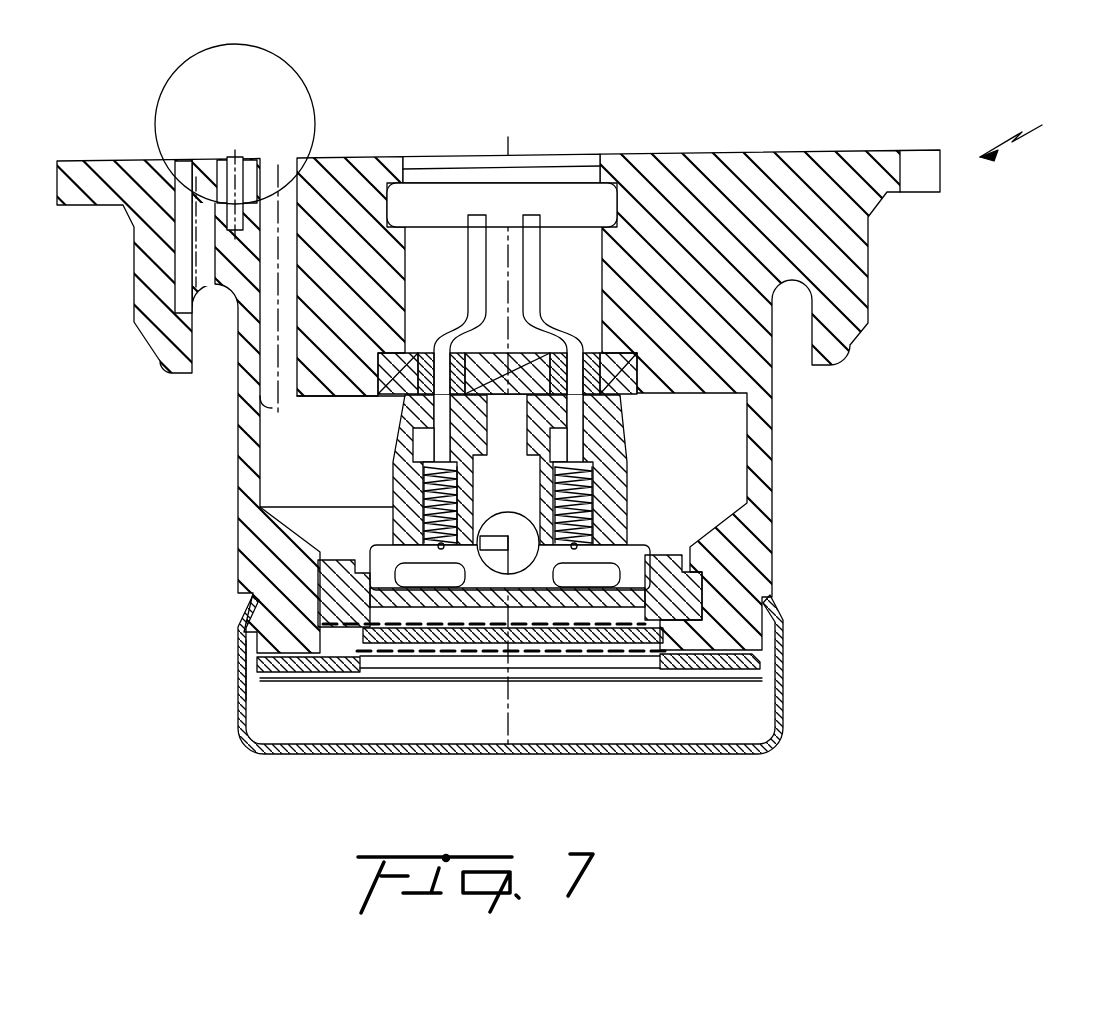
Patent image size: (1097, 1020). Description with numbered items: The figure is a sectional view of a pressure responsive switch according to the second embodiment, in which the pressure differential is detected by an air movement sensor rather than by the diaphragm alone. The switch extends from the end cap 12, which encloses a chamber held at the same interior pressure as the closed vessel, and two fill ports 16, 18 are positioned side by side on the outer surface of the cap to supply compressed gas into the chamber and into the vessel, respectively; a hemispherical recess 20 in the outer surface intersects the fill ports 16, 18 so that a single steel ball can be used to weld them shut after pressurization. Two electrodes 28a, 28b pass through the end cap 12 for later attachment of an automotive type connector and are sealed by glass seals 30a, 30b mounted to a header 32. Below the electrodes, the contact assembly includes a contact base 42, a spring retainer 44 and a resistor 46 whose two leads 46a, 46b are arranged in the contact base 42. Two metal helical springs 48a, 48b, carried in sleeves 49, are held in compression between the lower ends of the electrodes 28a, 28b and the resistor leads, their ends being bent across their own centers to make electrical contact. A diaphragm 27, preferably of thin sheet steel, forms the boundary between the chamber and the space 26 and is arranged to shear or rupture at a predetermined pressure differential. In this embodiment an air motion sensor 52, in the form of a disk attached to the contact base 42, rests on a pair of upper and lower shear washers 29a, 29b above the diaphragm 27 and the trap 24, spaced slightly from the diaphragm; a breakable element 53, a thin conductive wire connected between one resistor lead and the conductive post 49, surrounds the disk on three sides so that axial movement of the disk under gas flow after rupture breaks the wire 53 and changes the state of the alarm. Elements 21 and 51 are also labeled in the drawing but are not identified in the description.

The end cap 12 is at (1029, 136).
The fill port 16 is at (260, 393).
The fill port 18 is at (192, 255).
The hemispherical recess 20 is at (176, 172).
The pin 21 is at (243, 162).
The trap 24 is at (703, 756).
The space 26 is at (275, 714).
The diaphragm 27 is at (590, 658).
The electrode 28a is at (533, 215).
The electrode 28b is at (477, 215).
The upper shear washer 29a is at (757, 662).
The lower shear washer 29b is at (735, 680).
The glass seal 30a is at (585, 352).
The glass seal 30b is at (425, 352).
The header 32 is at (615, 357).
The contact base 42 is at (713, 548).
The spring retainer 44 is at (745, 404).
The resistor 46 is at (527, 532).
The resistor lead 46a is at (527, 534).
The resistor lead 46b is at (432, 676).
The helical spring 48a is at (595, 468).
The helical spring 48b is at (418, 478).
The sleeve 49 is at (412, 510).
The detail circle 51 is at (178, 72).
The air motion sensor 52 is at (700, 590).
The breakable element 53 is at (725, 632).